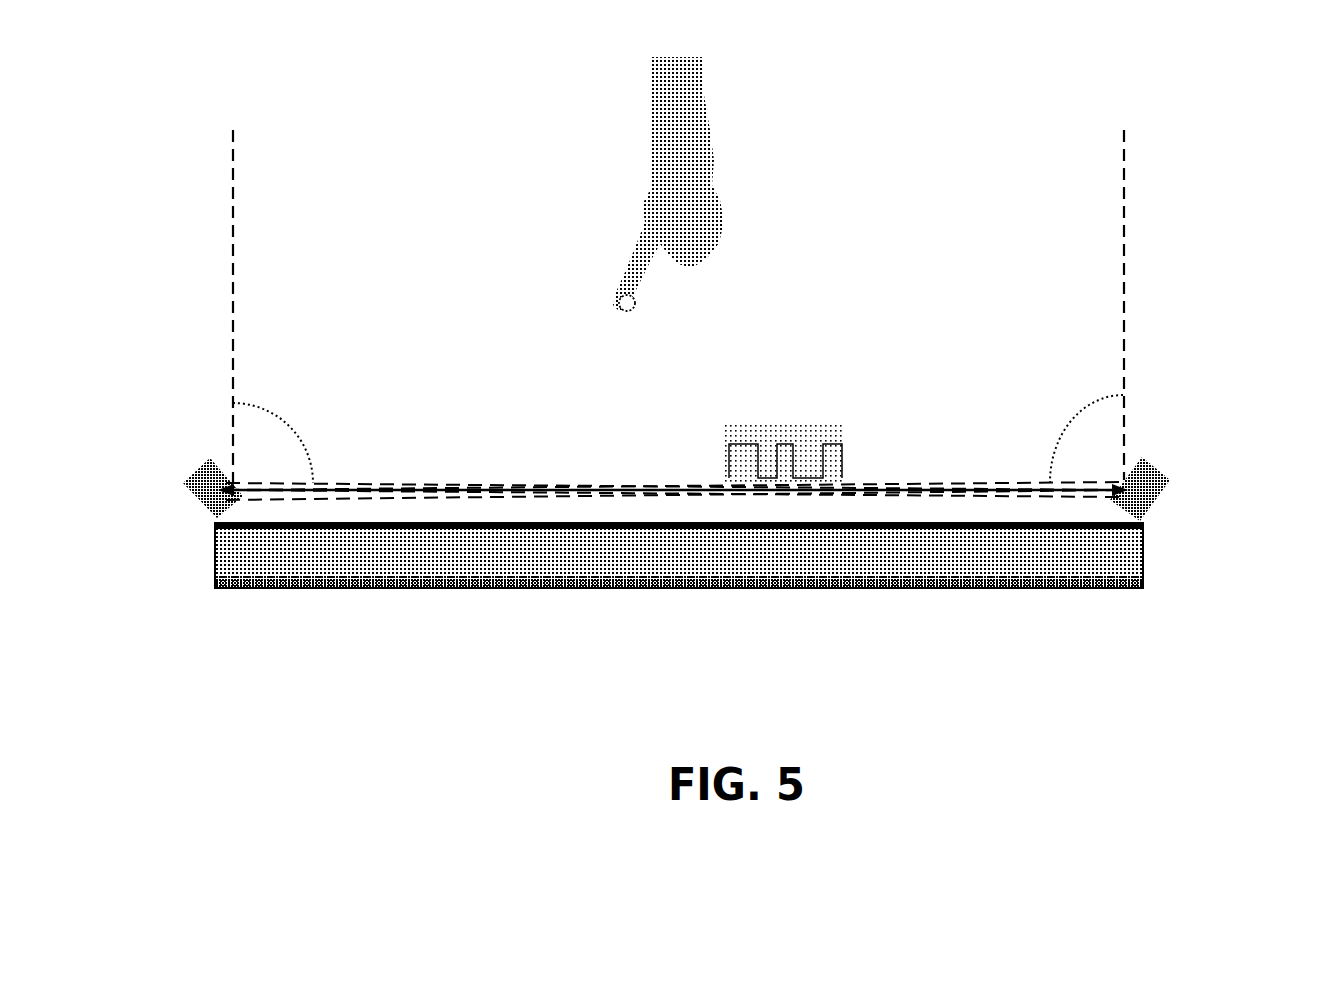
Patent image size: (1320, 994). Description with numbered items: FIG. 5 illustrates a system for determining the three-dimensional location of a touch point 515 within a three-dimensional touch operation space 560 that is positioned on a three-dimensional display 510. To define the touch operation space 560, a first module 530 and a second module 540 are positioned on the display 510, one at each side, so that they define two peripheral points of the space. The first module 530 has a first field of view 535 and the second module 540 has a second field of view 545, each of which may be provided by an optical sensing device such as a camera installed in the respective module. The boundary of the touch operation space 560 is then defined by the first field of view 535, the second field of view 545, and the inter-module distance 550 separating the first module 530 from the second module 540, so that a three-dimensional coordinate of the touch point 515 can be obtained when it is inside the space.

The 3D display 510 is at (679, 608).
The touch point 515 is at (628, 230).
The first module 530 is at (180, 578).
The first field of view 535 is at (303, 380).
The second module 540 is at (1176, 576).
The second field of view 545 is at (1039, 382).
The inter-module distance 550 is at (673, 440).
The 3D touch operation space 560 is at (833, 248).